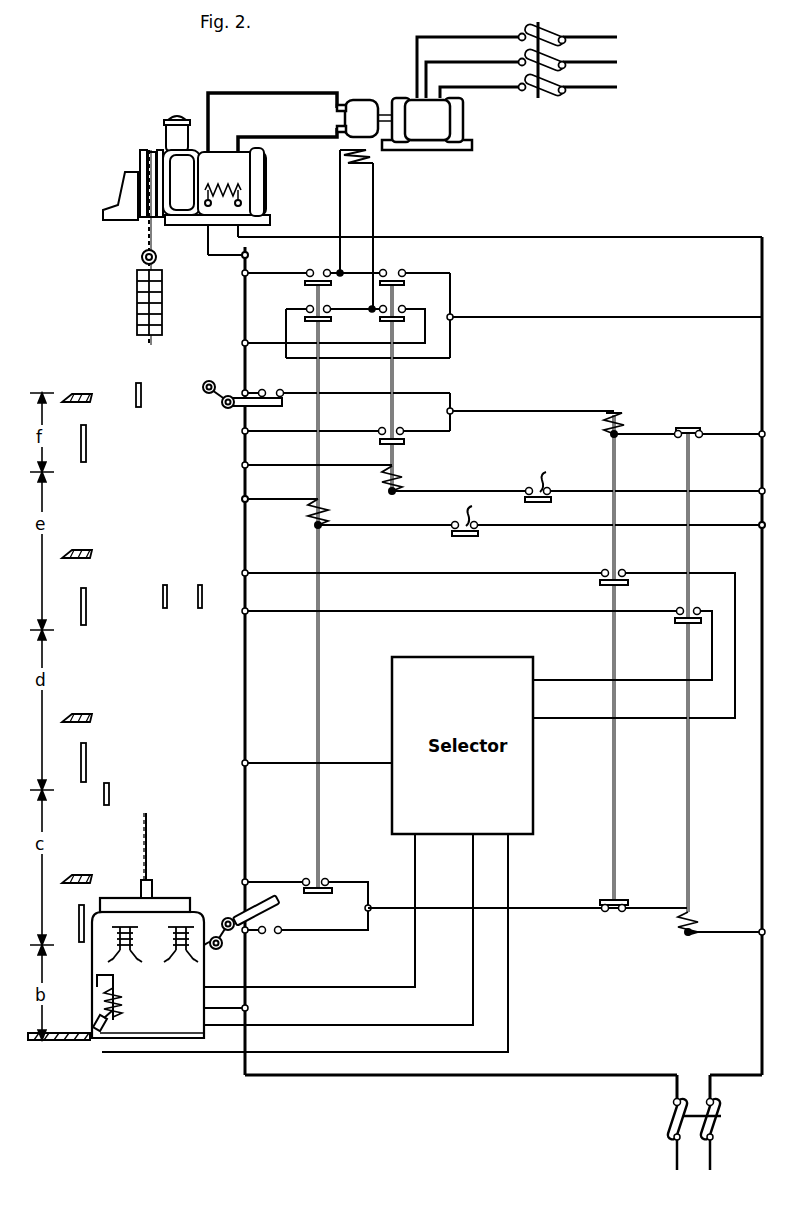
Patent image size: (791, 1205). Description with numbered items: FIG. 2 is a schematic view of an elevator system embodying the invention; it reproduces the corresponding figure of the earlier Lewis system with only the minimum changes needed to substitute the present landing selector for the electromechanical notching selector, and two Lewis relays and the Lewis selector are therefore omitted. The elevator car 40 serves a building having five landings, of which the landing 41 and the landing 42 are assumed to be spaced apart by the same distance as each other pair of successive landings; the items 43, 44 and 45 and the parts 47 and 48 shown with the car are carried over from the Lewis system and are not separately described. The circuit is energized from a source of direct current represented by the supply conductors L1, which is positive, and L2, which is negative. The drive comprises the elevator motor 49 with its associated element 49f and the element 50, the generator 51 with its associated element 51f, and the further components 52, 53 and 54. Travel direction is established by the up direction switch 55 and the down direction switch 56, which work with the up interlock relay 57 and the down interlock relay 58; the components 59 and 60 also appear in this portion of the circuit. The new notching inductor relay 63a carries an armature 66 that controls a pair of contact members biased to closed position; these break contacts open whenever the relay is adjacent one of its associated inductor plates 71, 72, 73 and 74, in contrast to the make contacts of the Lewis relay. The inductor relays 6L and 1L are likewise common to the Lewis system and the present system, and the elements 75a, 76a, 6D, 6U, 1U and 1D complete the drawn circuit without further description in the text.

The elevator car 40 is at (134, 956).
The landing 41 is at (66, 1042).
The landing 42 is at (74, 874).
The stop wedge 43 is at (74, 713).
The stop wedge 44 is at (74, 549).
The stop wedge 45 is at (74, 392).
The drum 47 is at (140, 157).
The counterweight 48 is at (163, 297).
The elevator motor 49 is at (227, 186).
The brake coil field 49f is at (223, 183).
The brake 50 is at (180, 116).
The generator 51 is at (368, 90).
The coupling field 51f is at (374, 162).
The motor 52 is at (462, 119).
The switch 53 is at (671, 1122).
The line switch 54 is at (547, 96).
The up direction switch 55 is at (393, 377).
The down direction switch 56 is at (316, 541).
The up interlock relay 57 is at (618, 420).
The down interlock relay 58 is at (686, 459).
The limit switch 59 is at (222, 400).
The limit switch 60 is at (236, 910).
The notching inductor relay 63a is at (158, 985).
The armature 66 is at (96, 1016).
The inductor plate 71 is at (79, 922).
The inductor plate 72 is at (86, 759).
The inductor plate 73 is at (86, 603).
The inductor plate 74 is at (86, 437).
The switch contact 75a is at (547, 470).
The switch contact 76a is at (472, 516).
The down contact 6D is at (141, 395).
The up contact 6U is at (109, 794).
The inductor relay 6L is at (133, 942).
The up contact 1U is at (167, 596).
The down contact 1D is at (202, 596).
The inductor relay 1L is at (168, 953).
The supply conductor L1 is at (245, 297).
The supply conductor L2 is at (762, 268).